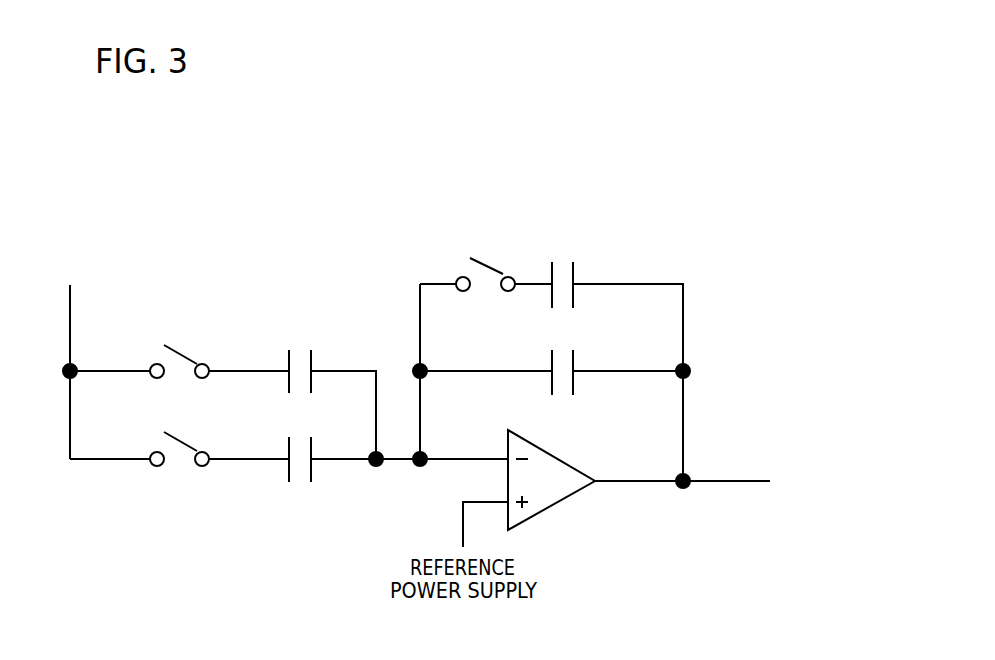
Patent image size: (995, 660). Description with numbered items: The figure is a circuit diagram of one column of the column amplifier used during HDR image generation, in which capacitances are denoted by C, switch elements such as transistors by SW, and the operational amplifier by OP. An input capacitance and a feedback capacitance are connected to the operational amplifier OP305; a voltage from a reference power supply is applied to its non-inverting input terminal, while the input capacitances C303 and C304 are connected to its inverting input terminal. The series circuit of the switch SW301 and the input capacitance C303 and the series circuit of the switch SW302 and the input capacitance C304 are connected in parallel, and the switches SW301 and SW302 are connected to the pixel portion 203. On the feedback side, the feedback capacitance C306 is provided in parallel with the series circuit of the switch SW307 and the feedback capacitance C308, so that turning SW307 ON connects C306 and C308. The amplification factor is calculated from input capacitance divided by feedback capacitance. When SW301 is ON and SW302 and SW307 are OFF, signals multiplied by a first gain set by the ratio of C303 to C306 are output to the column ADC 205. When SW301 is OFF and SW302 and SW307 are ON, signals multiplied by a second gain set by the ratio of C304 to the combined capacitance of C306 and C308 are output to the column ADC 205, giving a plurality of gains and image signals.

The switch element SW301 is at (212, 330).
The switch element SW302 is at (188, 468).
The input capacitance C303 is at (312, 368).
The input capacitance C304 is at (312, 465).
The operational amplifier OP305 is at (565, 500).
The feedback capacitance C306 is at (573, 362).
The switch element SW307 is at (498, 272).
The feedback capacitance C308 is at (573, 283).
The pixel portion 203 is at (70, 345).
The column ADC 205 is at (785, 480).